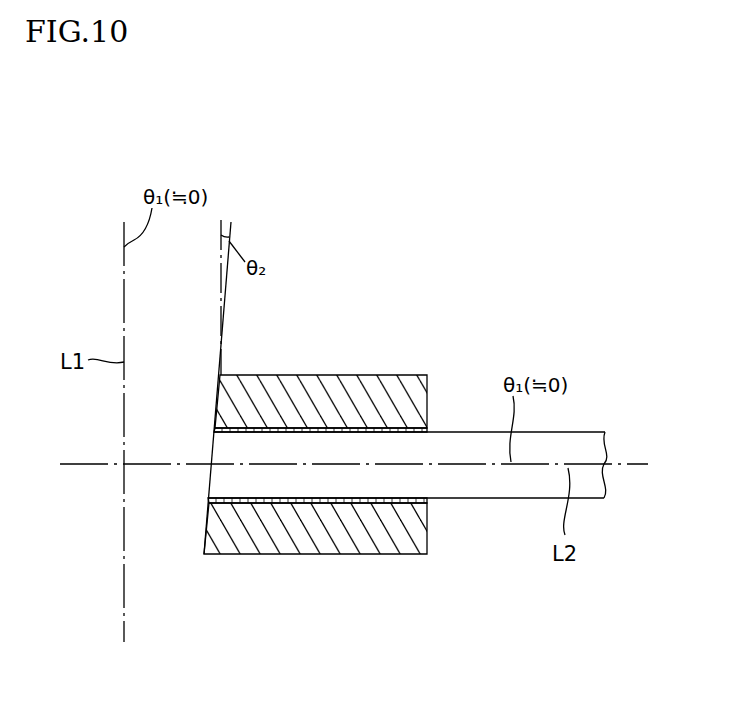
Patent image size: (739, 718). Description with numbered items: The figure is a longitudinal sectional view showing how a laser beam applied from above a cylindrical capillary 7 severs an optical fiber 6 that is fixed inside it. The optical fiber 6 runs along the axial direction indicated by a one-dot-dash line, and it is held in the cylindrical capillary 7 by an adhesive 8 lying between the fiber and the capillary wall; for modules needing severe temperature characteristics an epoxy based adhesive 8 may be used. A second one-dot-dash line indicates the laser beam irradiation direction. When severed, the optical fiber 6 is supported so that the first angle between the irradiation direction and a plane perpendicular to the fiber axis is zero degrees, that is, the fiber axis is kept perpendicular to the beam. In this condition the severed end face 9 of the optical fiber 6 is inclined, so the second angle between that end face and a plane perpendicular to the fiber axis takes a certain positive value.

The optical fiber 6 is at (477, 485).
The cylindrical capillary 7 is at (332, 540).
The adhesive 8 is at (385, 505).
The end face 9 is at (209, 487).